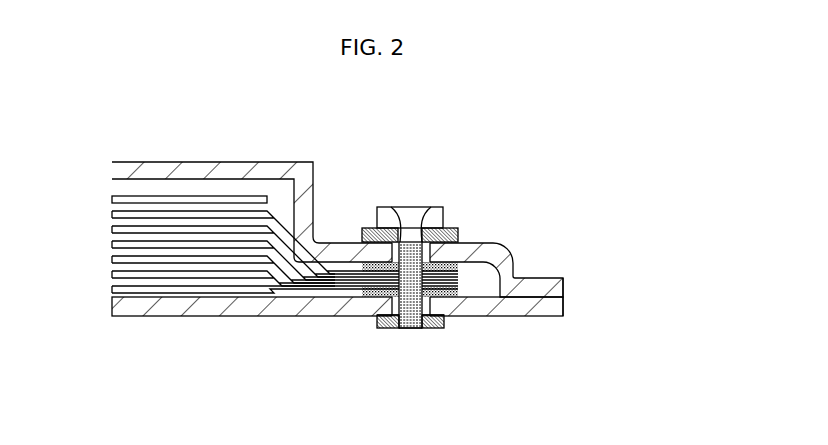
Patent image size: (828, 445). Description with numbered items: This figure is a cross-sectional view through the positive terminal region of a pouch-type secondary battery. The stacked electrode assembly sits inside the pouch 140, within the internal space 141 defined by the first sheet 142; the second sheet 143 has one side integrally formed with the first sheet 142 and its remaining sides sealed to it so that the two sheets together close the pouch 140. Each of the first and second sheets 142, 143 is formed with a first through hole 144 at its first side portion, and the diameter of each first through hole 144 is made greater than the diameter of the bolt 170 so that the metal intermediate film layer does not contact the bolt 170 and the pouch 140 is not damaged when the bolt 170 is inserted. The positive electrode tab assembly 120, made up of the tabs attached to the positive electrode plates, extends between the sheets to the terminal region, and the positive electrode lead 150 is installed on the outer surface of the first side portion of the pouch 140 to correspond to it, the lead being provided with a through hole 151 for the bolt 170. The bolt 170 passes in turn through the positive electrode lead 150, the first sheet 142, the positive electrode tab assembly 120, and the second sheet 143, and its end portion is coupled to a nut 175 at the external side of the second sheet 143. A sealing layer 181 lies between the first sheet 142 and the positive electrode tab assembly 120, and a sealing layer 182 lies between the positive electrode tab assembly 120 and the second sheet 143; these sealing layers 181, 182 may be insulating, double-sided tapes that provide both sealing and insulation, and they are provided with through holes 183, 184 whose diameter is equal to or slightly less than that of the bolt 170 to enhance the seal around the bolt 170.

The positive electrode tab assembly 120 is at (460, 267).
The pouch 140 is at (245, 161).
The internal space 141 is at (164, 190).
The first sheet 142 is at (564, 287).
The second sheet 143 is at (564, 303).
The first through holes 144 is at (419, 233).
The positive electrode lead 150 is at (459, 238).
The through hole 151 is at (407, 226).
The bolt 170 is at (410, 210).
The nut 175 is at (437, 329).
The sealing layer 181 is at (351, 243).
The sealing layer 182 is at (353, 298).
The through hole 183 is at (376, 316).
The through hole 184 is at (405, 329).